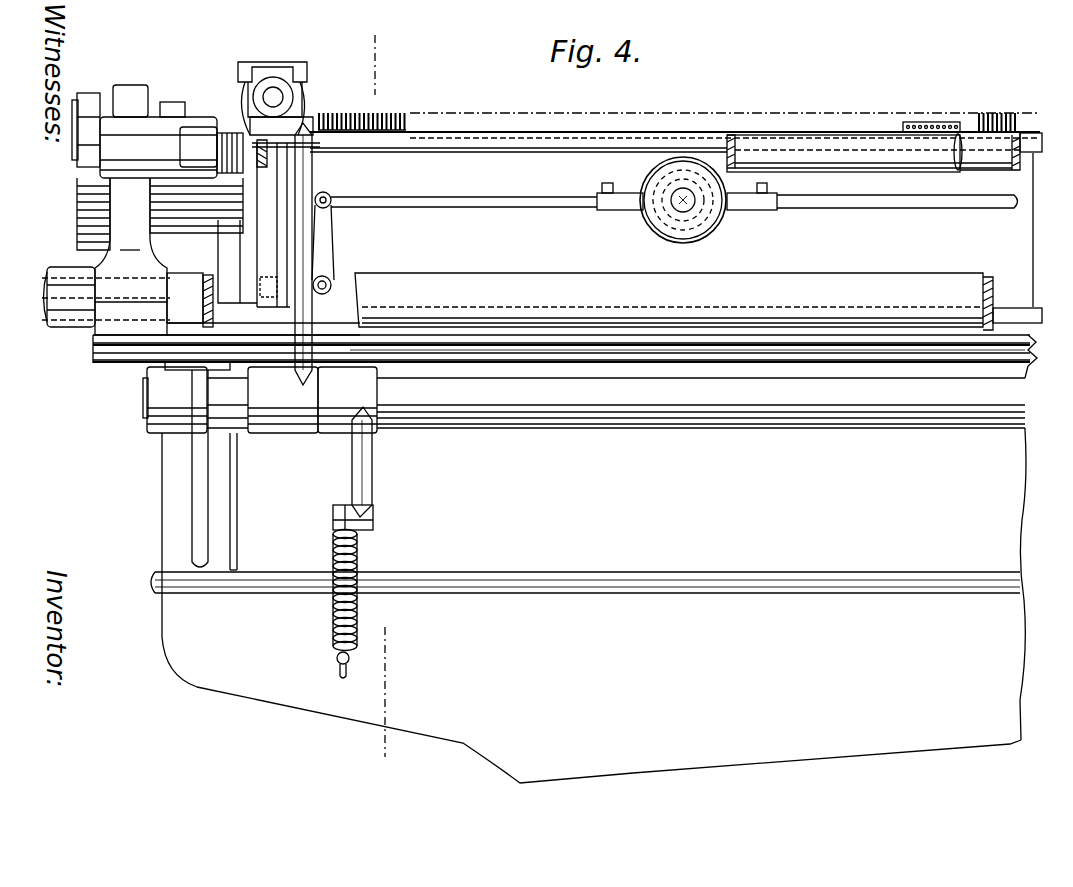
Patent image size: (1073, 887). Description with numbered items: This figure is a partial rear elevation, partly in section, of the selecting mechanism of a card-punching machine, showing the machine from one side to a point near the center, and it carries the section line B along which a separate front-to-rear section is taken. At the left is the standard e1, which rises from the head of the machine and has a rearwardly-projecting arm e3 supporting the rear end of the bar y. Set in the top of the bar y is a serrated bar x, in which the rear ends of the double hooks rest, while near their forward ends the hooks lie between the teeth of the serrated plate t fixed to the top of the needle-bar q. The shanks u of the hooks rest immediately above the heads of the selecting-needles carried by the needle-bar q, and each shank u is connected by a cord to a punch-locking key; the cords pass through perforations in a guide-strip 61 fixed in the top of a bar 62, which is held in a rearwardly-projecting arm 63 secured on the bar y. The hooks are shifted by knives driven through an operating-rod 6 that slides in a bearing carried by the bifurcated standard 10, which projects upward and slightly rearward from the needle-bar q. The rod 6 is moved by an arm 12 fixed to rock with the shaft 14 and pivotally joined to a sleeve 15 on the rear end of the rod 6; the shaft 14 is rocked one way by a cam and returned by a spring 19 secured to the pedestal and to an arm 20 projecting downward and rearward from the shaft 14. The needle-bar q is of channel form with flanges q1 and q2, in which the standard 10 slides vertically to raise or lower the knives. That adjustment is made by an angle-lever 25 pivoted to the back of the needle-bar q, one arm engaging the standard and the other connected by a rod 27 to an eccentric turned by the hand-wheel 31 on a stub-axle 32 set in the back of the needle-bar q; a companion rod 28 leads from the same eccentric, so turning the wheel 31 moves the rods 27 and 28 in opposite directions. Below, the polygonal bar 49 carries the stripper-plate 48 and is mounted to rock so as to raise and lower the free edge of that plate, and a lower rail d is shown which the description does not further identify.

The operating-rod 6 is at (276, 92).
The bifurcated standard 10 is at (244, 92).
The arm 12 is at (312, 195).
The rock-shaft 14 is at (652, 410).
The sleeve 15 is at (268, 78).
The spring 19 is at (332, 600).
The arm 20 is at (375, 462).
The angle-lever 25 is at (332, 243).
The rod 27 is at (515, 207).
The rod 28 is at (875, 208).
The hand-wheel 31 is at (713, 229).
The stub-axle 32 is at (682, 207).
The stripper-plate 48 is at (1032, 345).
The polygonal bar 49 is at (505, 301).
The guide-strip 61 is at (938, 125).
The bar 62 is at (838, 140).
The rearwardly-projecting arm 63 is at (211, 150).
The section line B is at (378, 397).
The rail d is at (783, 352).
The standard e1 is at (135, 256).
The rearwardly-projecting arm e3 is at (144, 131).
The needle-bar q is at (1005, 230).
The flange q1 is at (1028, 143).
The flange q2 is at (1030, 310).
The plate t is at (393, 116).
The shank u is at (1000, 103).
The serrated bar x is at (1017, 125).
The bar y is at (987, 172).